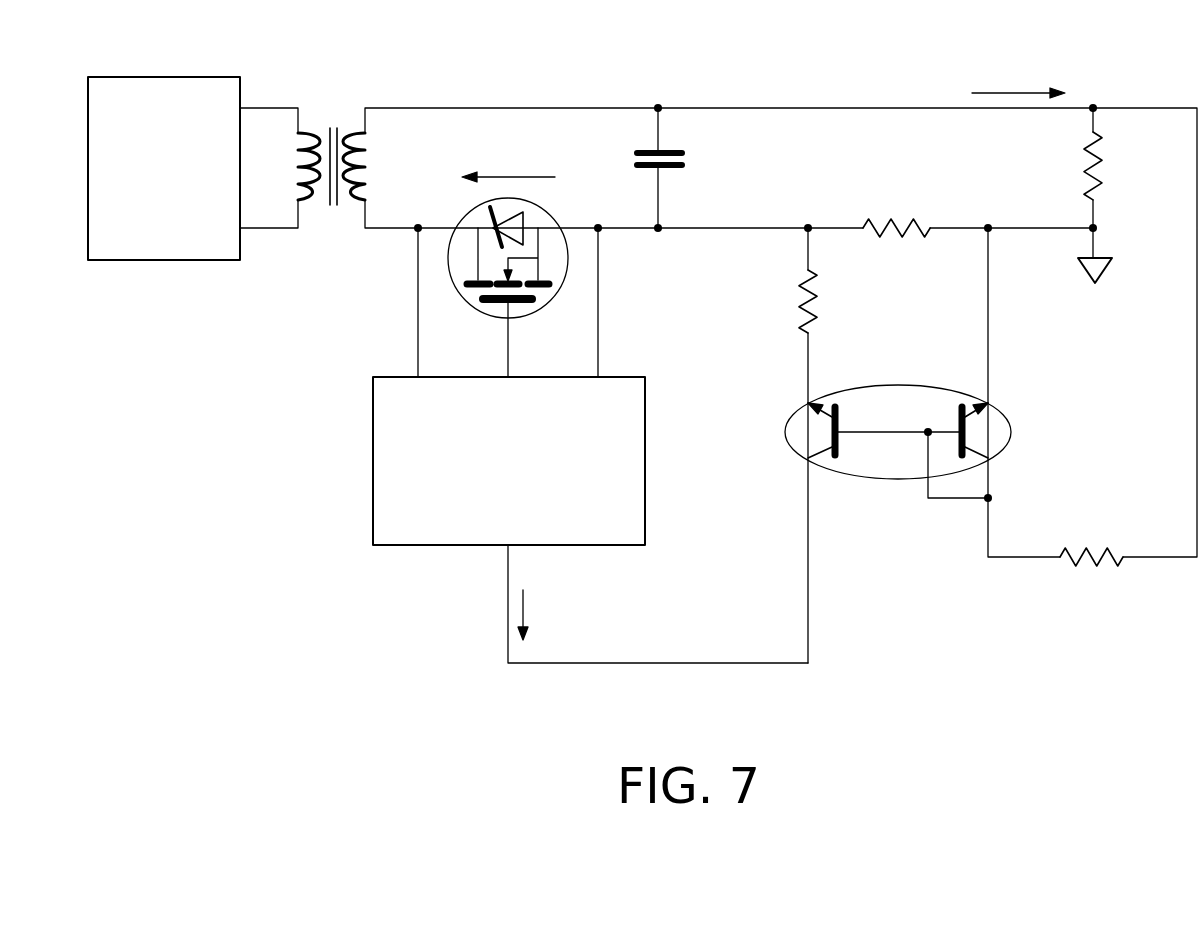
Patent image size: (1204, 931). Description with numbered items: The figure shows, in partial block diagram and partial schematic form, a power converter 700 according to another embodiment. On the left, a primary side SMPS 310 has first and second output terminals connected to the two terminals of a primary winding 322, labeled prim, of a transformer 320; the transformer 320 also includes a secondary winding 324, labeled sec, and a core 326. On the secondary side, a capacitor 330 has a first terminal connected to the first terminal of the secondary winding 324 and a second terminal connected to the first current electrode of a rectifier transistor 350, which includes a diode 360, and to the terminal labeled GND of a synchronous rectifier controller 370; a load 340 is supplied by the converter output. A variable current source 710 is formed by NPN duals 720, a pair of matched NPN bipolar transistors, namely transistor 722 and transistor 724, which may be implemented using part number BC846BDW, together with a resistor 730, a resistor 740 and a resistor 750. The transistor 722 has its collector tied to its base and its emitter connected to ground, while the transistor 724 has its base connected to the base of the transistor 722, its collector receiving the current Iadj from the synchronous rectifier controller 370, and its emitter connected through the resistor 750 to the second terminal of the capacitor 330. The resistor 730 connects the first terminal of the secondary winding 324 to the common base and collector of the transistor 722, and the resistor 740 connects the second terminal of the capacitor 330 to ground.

The power converter 700 is at (543, 783).
The primary side SMPS 310 is at (178, 77).
The transformer 320 is at (353, 91).
The primary winding 322 is at (310, 203).
The secondary winding 324 is at (357, 203).
The core 326 is at (333, 127).
The capacitor 330 is at (673, 168).
The load 340 is at (1081, 173).
The rectifier transistor 350 is at (541, 311).
The diode 360 is at (525, 219).
The synchronous rectifier controller 370 is at (648, 420).
The variable current source 710 is at (1108, 401).
The NPN duals 720 is at (1011, 436).
The transistor 722 is at (962, 404).
The transistor 724 is at (835, 404).
The resistor 730 is at (1083, 548).
The resistor 740 is at (892, 220).
The resistor 750 is at (797, 313).